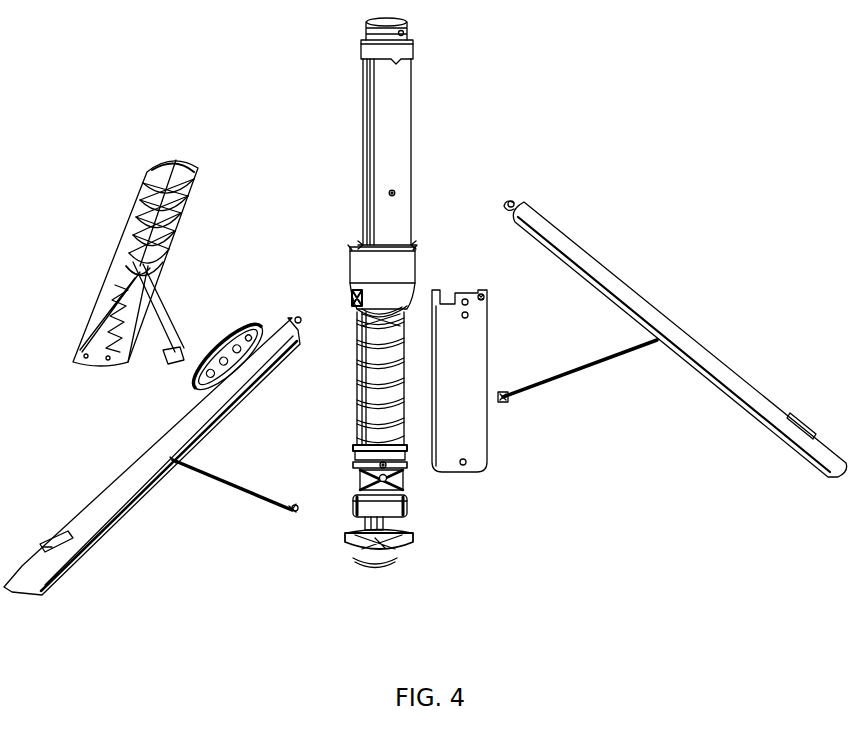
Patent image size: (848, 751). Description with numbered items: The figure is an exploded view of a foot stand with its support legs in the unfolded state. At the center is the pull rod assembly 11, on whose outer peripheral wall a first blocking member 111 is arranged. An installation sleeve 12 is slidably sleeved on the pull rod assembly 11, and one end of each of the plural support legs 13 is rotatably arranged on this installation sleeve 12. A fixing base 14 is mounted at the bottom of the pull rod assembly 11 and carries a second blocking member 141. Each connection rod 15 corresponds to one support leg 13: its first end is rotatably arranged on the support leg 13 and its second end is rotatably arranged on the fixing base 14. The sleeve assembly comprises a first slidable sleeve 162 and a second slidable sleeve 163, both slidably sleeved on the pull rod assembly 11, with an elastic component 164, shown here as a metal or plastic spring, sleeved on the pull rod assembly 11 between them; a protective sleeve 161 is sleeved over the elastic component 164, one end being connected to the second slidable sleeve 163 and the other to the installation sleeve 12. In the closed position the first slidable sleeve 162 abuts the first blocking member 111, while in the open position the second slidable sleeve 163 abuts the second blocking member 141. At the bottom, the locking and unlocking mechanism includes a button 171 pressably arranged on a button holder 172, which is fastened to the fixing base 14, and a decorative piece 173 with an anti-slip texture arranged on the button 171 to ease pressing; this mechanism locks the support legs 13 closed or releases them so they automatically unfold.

The pull rod assembly 11 is at (409, 128).
The first blocking member 111 is at (394, 190).
The installation sleeve 12 is at (355, 277).
The support legs 13 is at (145, 185).
The fixing base 14 is at (403, 480).
The second blocking member 141 is at (362, 488).
The connection rods 15 is at (564, 388).
The protective sleeve 161 is at (487, 346).
The first slidable sleeve 162 is at (353, 298).
The second slidable sleeve 163 is at (356, 461).
The elastic component 164 is at (358, 353).
The button 171 is at (405, 531).
The button holder 172 is at (407, 505).
The decorative piece 173 is at (394, 566).